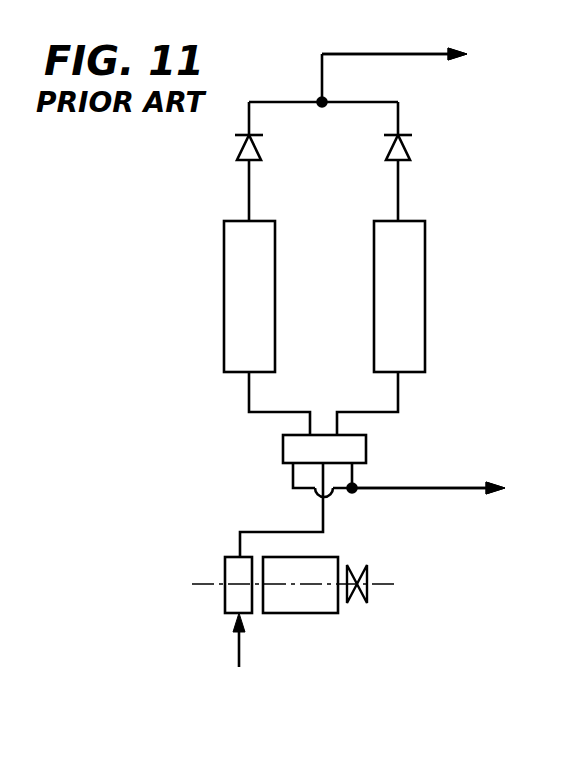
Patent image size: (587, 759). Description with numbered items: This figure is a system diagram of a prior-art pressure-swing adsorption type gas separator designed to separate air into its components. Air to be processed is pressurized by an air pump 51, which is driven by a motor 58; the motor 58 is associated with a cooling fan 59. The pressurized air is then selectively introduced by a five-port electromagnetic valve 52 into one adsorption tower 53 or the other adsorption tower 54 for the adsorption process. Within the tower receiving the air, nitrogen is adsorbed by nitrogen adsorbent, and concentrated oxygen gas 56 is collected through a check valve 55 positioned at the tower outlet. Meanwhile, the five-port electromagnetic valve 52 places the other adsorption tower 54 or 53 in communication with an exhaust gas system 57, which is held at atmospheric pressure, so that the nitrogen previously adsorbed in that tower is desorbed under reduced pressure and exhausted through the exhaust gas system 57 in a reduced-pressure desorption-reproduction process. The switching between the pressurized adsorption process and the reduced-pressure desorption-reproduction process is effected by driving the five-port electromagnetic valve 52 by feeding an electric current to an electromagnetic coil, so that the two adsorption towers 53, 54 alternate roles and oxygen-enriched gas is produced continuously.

The air pump 51 is at (228, 614).
The five-port electromagnetic valve 52 is at (367, 440).
The adsorption tower 53 is at (275, 302).
The adsorption tower 54 is at (425, 302).
The check valve 55 is at (258, 150).
The concentrated oxygen gas 56 is at (415, 54).
The exhaust gas system 57 is at (432, 488).
The motor 58 is at (285, 614).
The cooling fan 59 is at (362, 564).